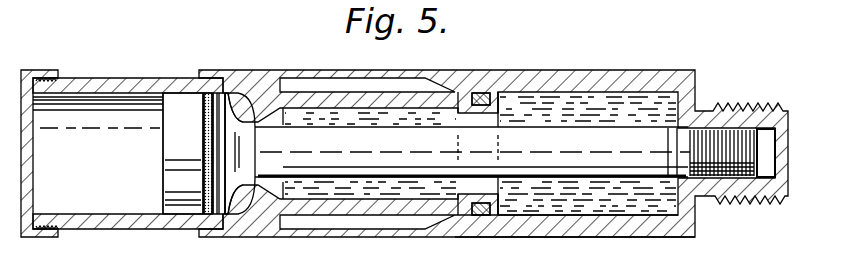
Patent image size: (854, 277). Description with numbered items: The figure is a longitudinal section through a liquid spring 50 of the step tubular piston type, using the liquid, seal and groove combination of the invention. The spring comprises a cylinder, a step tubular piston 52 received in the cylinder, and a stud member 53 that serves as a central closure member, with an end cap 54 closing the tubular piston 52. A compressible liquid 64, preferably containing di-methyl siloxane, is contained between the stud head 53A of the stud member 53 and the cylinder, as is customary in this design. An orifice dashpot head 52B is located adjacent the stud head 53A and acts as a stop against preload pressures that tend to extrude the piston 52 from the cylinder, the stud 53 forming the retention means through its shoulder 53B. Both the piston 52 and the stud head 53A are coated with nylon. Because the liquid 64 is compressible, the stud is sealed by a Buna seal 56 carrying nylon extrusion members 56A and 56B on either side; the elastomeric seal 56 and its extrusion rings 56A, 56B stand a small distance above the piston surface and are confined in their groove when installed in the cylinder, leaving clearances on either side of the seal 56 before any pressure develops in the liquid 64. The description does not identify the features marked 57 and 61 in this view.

The liquid spring 50 is at (381, 69).
The step tubular piston 52 is at (116, 80).
The orifice dashpot head 52B is at (268, 110).
The stud member 53 is at (159, 194).
The stud head 53A is at (178, 105).
The shoulder 53B is at (270, 144).
The end cap 54 is at (20, 238).
The Buna seal 56 is at (479, 95).
The nylon extrusion member 56A is at (202, 168).
The nylon extrusion member 56B is at (212, 146).
The housing end portion 57 is at (612, 230).
The spacer 61 is at (503, 106).
The compressible liquid 64 is at (626, 110).